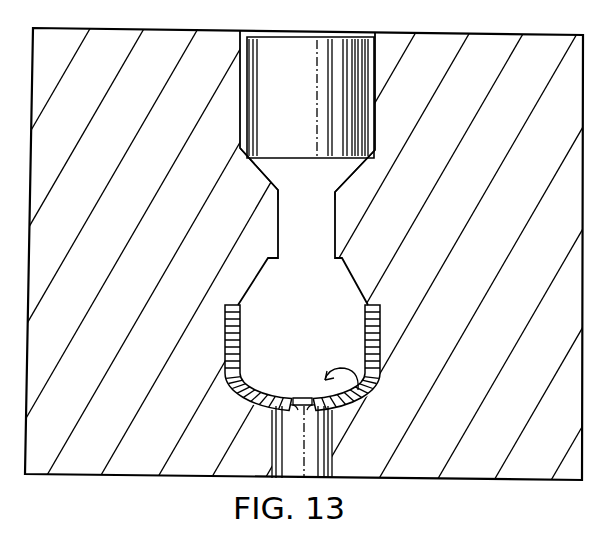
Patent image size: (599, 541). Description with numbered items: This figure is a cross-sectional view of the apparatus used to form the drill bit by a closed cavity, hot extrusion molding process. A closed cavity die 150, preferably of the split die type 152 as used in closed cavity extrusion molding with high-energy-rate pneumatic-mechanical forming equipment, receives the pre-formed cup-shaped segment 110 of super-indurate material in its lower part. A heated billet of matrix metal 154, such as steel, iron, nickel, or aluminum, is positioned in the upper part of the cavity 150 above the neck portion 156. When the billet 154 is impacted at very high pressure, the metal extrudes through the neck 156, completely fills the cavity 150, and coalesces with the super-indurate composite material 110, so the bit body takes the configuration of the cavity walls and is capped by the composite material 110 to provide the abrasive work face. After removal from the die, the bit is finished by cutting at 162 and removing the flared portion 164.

The pre-formed cup-shaped segment 110 is at (376, 353).
The closed cavity die 150 is at (365, 398).
The split die type 152 is at (121, 431).
The heated billet of matrix metal 154 is at (300, 115).
The neck portion 156 is at (322, 236).
The cutting location 162 is at (333, 193).
The flared portion 164 is at (293, 173).